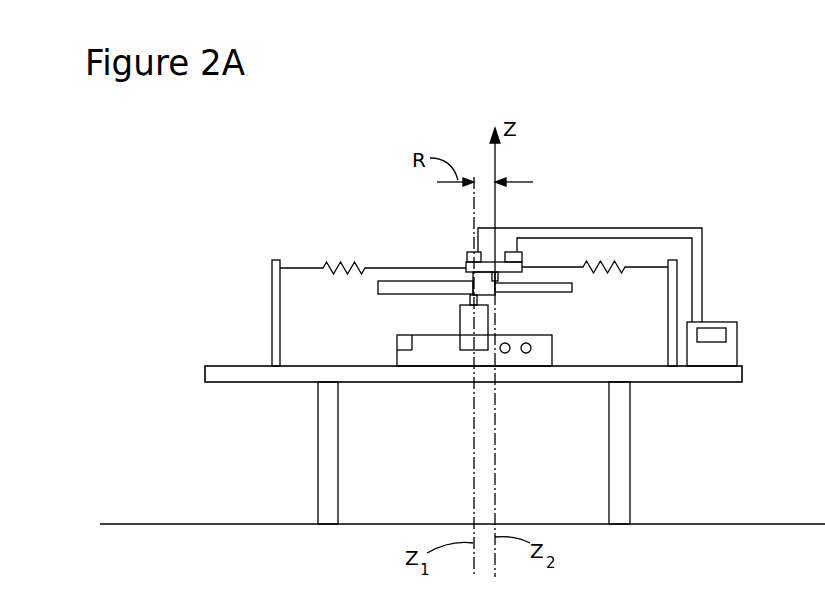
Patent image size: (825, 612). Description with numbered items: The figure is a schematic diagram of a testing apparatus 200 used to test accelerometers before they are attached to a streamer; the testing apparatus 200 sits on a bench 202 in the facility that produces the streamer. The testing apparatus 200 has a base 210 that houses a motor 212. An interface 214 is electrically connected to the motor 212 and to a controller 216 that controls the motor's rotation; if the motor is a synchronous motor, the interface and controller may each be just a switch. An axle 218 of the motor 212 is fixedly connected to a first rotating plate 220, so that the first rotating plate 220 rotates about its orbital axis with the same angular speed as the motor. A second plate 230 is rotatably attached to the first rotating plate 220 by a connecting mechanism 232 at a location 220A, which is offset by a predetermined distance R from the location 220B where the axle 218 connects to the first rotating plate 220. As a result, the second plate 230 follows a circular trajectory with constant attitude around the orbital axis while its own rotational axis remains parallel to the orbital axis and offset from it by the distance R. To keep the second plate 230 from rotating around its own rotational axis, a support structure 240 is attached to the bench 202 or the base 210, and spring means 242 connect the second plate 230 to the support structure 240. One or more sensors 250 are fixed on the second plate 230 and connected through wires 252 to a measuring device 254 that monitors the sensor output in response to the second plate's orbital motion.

The testing apparatus 200 is at (523, 48).
The bench 202 is at (668, 372).
The base 210 is at (419, 352).
The motor 212 is at (484, 320).
The interface 214 is at (527, 354).
The controller 216 is at (397, 338).
The axle 218 is at (497, 280).
The first rotating plate 220 is at (480, 295).
The location 220A is at (572, 288).
The location 220B is at (471, 294).
The second plate 230 is at (466, 266).
The connecting mechanism 232 is at (496, 277).
The support structure 240 is at (272, 293).
The spring means 242 is at (307, 266).
The sensors 250 is at (522, 257).
The wires 252 is at (672, 228).
The measuring device 254 is at (737, 332).